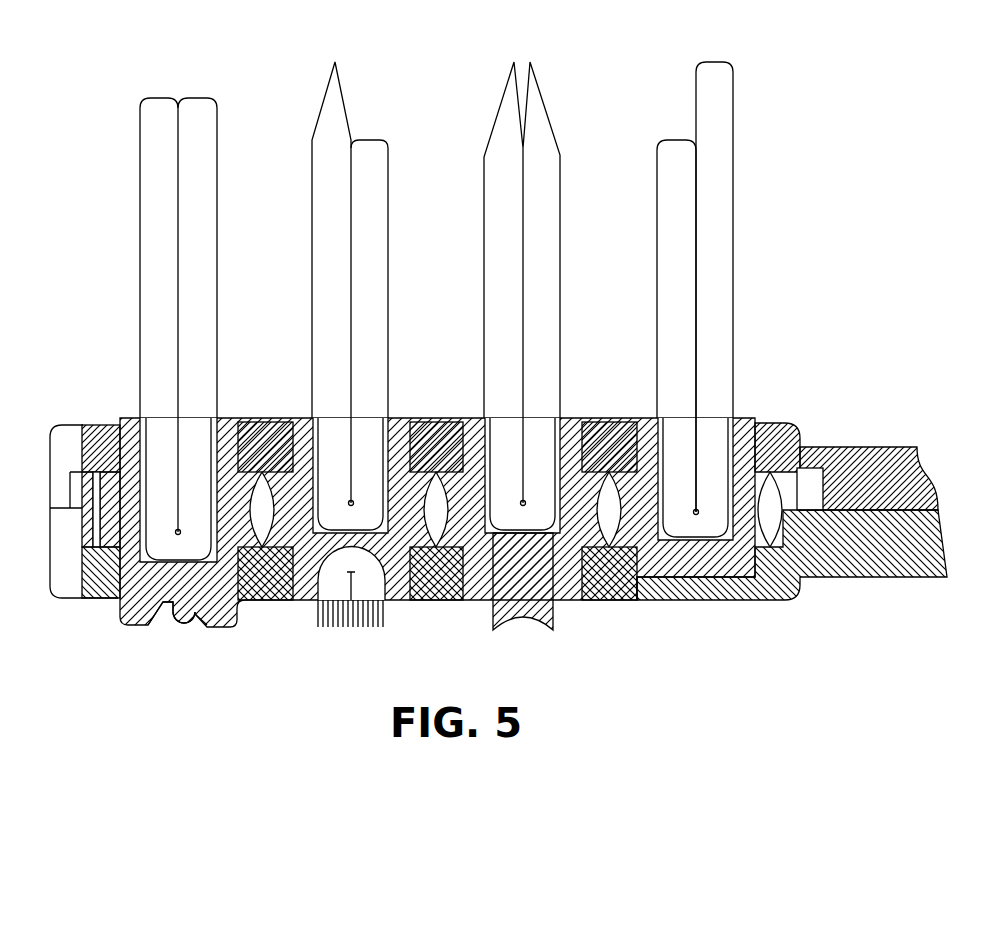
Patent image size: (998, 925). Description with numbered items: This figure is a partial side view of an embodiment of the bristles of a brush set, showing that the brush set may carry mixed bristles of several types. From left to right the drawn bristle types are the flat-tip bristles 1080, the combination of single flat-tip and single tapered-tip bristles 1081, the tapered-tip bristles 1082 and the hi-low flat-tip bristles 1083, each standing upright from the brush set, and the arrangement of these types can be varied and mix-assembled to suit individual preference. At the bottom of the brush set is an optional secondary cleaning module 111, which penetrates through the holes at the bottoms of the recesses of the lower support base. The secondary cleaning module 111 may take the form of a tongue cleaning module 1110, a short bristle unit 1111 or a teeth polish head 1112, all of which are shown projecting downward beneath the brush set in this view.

The secondary cleaning module 111 is at (112, 628).
The tongue cleaning module 1110 is at (140, 627).
The short bristle unit 1111 is at (345, 615).
The teeth polish head 1112 is at (527, 620).
The flat-tip bristles 1080 is at (133, 103).
The combination of single flat-tip and single tapered-tip bristles 1081 is at (318, 88).
The tapered-tip bristles 1082 is at (493, 108).
The hi-low flat-tip bristles 1083 is at (683, 125).